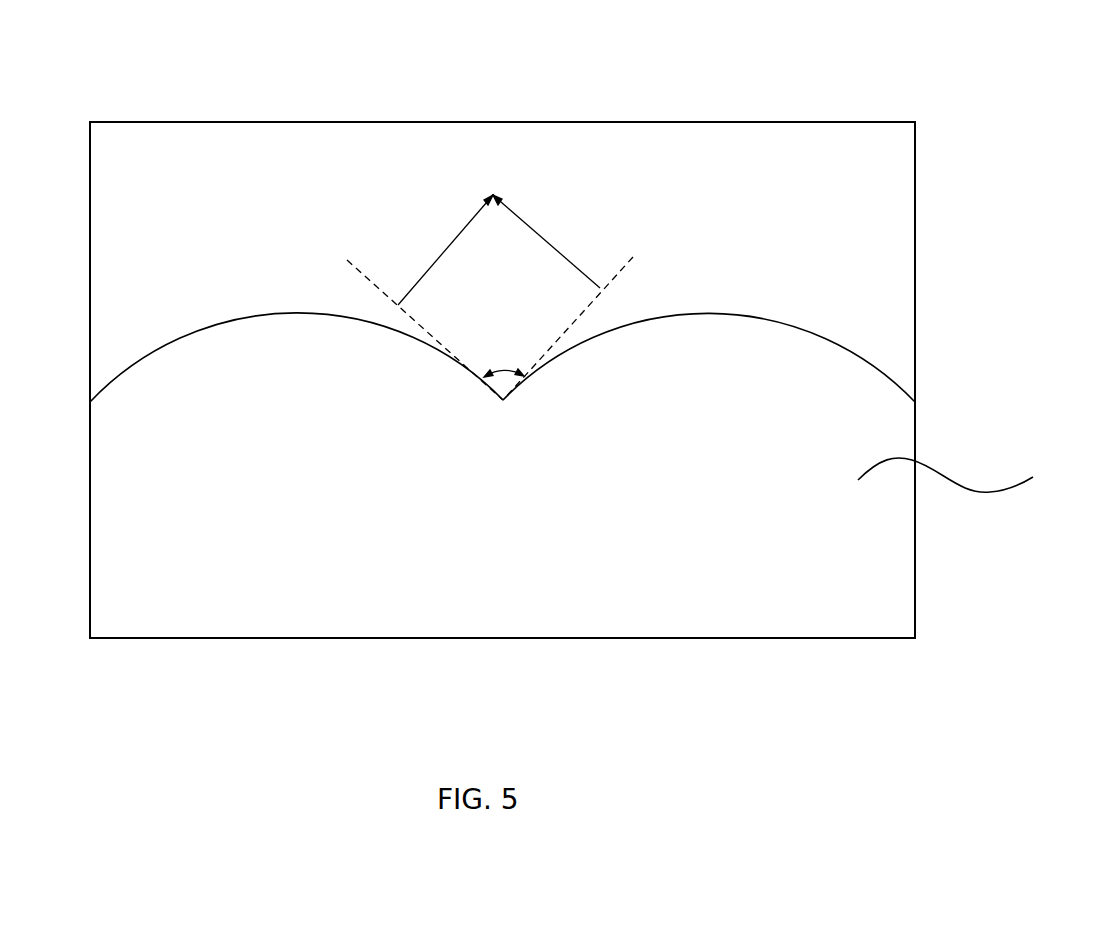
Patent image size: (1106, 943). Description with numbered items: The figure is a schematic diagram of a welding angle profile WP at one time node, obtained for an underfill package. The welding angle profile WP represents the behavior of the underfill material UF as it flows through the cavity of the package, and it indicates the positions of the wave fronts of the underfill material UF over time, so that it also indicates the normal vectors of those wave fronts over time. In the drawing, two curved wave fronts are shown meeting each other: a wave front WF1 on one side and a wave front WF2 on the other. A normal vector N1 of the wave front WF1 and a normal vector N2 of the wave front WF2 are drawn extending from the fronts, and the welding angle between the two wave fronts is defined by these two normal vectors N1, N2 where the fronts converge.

The welding angle profile WP is at (521, 63).
The wave front WF1 is at (279, 306).
The wave front WF2 is at (712, 306).
The normal vector N1 is at (443, 250).
The normal vector N2 is at (546, 241).
The underfill material UF is at (972, 477).